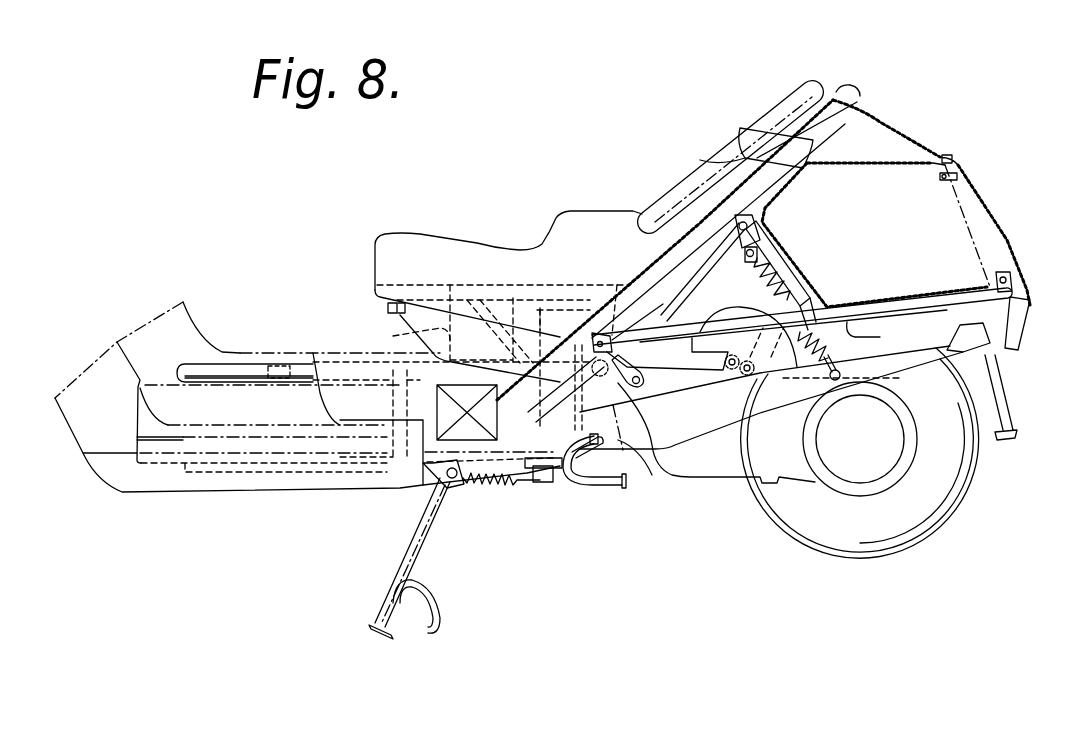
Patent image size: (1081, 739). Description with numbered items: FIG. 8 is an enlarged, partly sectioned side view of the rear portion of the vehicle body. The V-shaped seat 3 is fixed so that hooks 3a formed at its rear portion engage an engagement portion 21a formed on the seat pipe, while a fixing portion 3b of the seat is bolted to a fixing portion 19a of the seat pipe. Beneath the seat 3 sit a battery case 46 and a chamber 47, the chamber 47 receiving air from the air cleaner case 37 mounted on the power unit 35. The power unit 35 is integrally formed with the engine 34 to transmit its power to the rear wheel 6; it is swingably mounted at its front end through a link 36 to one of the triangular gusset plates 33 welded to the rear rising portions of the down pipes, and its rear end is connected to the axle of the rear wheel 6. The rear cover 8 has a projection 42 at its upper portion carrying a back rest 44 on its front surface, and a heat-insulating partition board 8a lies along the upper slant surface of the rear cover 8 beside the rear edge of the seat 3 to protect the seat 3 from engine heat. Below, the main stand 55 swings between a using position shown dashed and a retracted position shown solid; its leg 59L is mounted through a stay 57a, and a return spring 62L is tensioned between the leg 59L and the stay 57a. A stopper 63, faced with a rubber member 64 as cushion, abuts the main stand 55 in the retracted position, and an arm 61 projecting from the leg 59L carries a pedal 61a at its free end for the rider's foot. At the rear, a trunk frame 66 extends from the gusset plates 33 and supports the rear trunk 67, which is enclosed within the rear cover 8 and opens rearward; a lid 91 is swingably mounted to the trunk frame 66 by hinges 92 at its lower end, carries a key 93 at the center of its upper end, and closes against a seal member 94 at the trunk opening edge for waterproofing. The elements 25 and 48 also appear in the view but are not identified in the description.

The seat 3 is at (420, 233).
The hooks 3a is at (718, 231).
The fixing portion 3b is at (388, 305).
The rear wheel 6 is at (974, 480).
The rear cover 8 is at (866, 106).
The partition board 8a is at (735, 163).
The fixing portion 19a is at (398, 313).
The engagement portion 21a is at (654, 318).
The fuel tank tube 25 is at (222, 388).
The gusset plates 33 is at (650, 325).
The engine 34 is at (740, 292).
The power unit 35 is at (687, 477).
The link 36 is at (628, 363).
The air cleaner case 37 is at (778, 296).
The projection 42 is at (882, 122).
The back rest 44 is at (792, 92).
The battery case 46 is at (393, 336).
The chamber 47 is at (540, 308).
The partition 48 is at (617, 285).
The main stand 55 is at (544, 487).
The stay 57a is at (440, 468).
The leg 59L is at (512, 482).
The arm 61 is at (596, 466).
The pedal 61a is at (632, 482).
The return spring 62L is at (456, 488).
The stopper 63 is at (535, 484).
The rubber member 64 is at (557, 484).
The trunk frame 66 is at (871, 305).
The rear trunk 67 is at (849, 164).
The lid 91 is at (994, 214).
The hinges 92 is at (1017, 268).
The key 93 is at (968, 173).
The seal member 94 is at (960, 157).